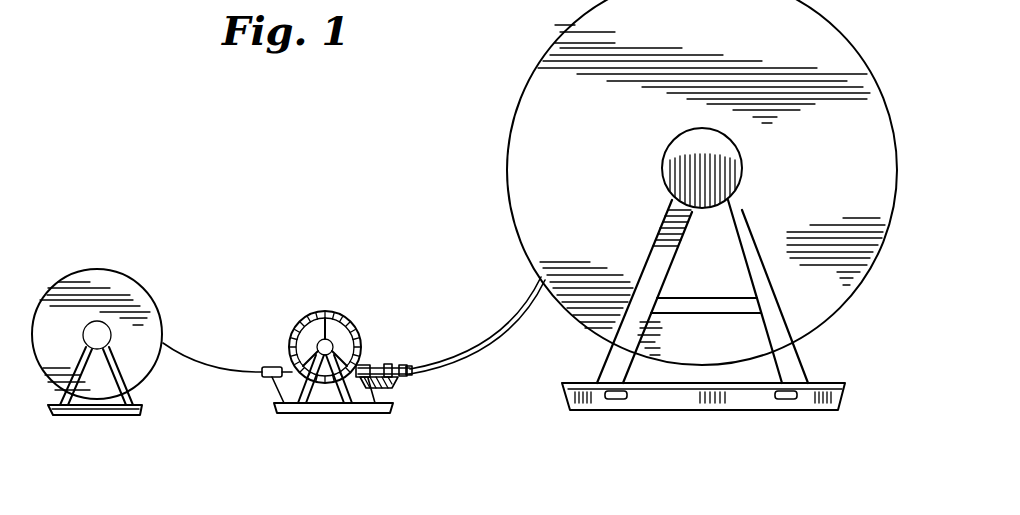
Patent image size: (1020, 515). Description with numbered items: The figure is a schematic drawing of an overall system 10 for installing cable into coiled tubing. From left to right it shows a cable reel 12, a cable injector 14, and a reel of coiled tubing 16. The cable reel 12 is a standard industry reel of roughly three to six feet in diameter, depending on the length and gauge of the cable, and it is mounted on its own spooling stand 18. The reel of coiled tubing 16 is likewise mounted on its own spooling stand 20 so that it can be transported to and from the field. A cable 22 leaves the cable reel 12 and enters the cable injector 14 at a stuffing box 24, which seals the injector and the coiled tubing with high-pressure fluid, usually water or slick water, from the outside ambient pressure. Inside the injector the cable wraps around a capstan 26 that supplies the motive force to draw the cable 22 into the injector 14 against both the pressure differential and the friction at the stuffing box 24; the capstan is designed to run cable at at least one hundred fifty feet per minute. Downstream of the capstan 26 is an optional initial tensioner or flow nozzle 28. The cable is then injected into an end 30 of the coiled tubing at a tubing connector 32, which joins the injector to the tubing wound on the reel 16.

The system 10 is at (416, 264).
The cable reel 12 is at (122, 272).
The cable injector 14 is at (333, 313).
The reel of coiled tubing 16 is at (555, 43).
The spooling stand 18 is at (142, 408).
The spooling stand 20 is at (835, 392).
The cable 22 is at (185, 355).
The stuffing box 24 is at (272, 366).
The capstan 26 is at (355, 336).
The initial tensioner or flow nozzle 28 is at (390, 388).
The end of the coiled tubing 30 is at (497, 341).
The tubing connector 32 is at (410, 370).